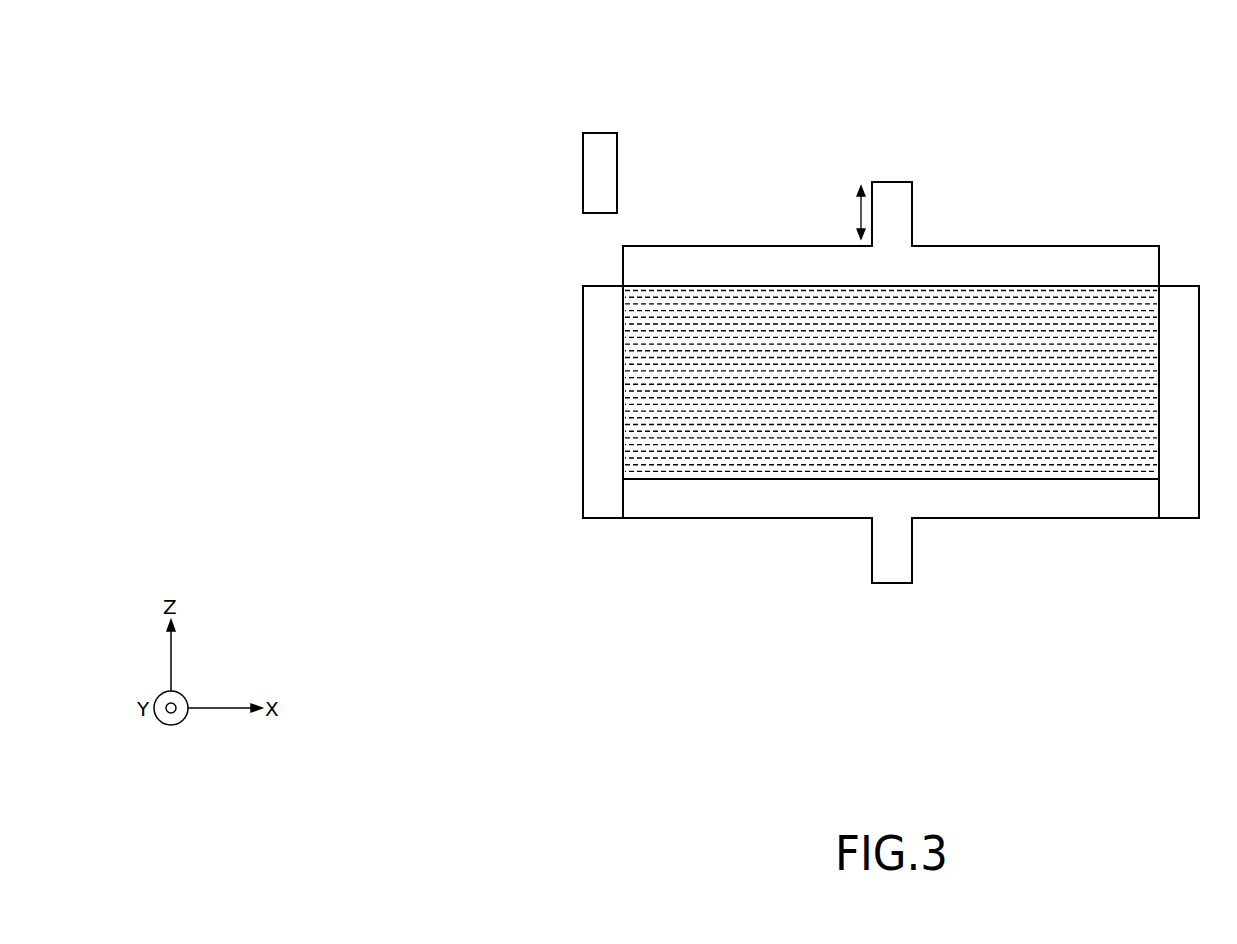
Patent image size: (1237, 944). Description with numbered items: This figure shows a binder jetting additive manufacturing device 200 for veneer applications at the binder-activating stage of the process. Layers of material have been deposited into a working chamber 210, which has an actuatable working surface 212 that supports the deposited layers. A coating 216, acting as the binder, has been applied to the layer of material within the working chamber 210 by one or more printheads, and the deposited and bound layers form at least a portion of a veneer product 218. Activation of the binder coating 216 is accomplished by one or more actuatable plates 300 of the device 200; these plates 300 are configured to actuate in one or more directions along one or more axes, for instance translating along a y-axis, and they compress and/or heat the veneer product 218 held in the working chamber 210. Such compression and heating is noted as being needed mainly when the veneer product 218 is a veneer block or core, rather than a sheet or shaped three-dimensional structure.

The binder jetting additive manufacturing device 200 is at (763, 302).
The working chamber 210 is at (843, 434).
The actuatable working surface 212 is at (749, 508).
The coating 216 is at (552, 173).
The veneer product 218 is at (643, 357).
The actuatable plates 300 is at (757, 262).